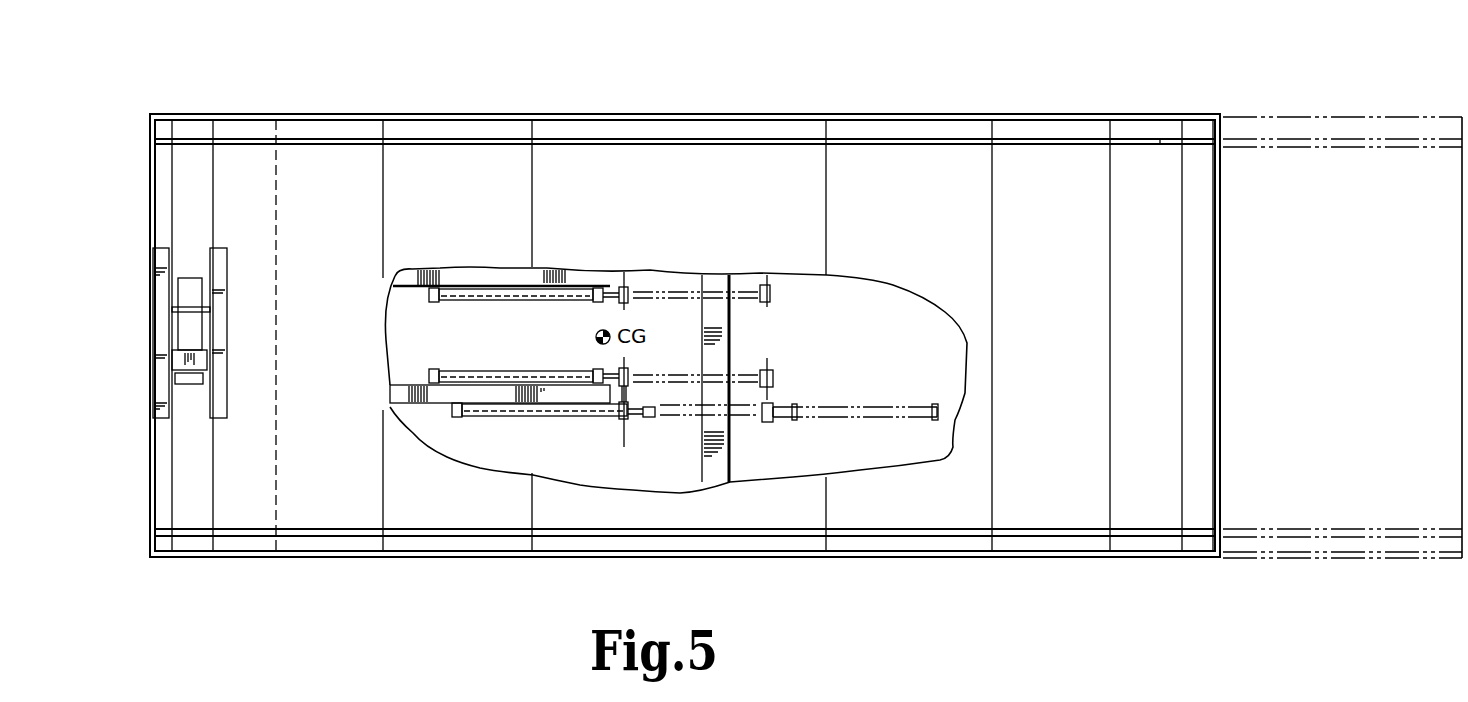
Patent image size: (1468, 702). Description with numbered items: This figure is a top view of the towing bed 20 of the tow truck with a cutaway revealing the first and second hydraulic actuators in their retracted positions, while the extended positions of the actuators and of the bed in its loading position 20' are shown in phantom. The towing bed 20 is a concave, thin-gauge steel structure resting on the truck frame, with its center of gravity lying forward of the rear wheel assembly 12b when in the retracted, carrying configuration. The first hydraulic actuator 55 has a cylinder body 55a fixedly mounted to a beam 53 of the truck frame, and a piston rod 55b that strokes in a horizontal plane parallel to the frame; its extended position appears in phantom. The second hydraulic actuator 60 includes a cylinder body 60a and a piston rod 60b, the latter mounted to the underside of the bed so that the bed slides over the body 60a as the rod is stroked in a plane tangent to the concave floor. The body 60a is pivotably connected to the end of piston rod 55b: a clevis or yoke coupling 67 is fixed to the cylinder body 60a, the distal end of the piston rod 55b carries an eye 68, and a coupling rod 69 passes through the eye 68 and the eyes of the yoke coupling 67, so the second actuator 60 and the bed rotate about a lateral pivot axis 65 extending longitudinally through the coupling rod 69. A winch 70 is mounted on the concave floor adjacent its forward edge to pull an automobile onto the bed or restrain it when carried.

The towing bed 20 is at (670, 335).
The towing bed in extended position 20' is at (1342, 306).
The winch 70 is at (194, 336).
The first hydraulic actuator 55 is at (453, 369).
The cylinder body 55a is at (507, 371).
The piston rod 55b is at (609, 370).
The beam 53 is at (390, 400).
The second hydraulic actuator 60 is at (487, 420).
The cylinder body 60a is at (553, 416).
The piston rod 60b is at (648, 427).
The lateral pivot axis 65 is at (624, 442).
The yoke coupling 67 is at (629, 400).
The eye 68 is at (630, 366).
The coupling rod 69 is at (628, 386).
The rear wheel assembly 12b is at (723, 323).